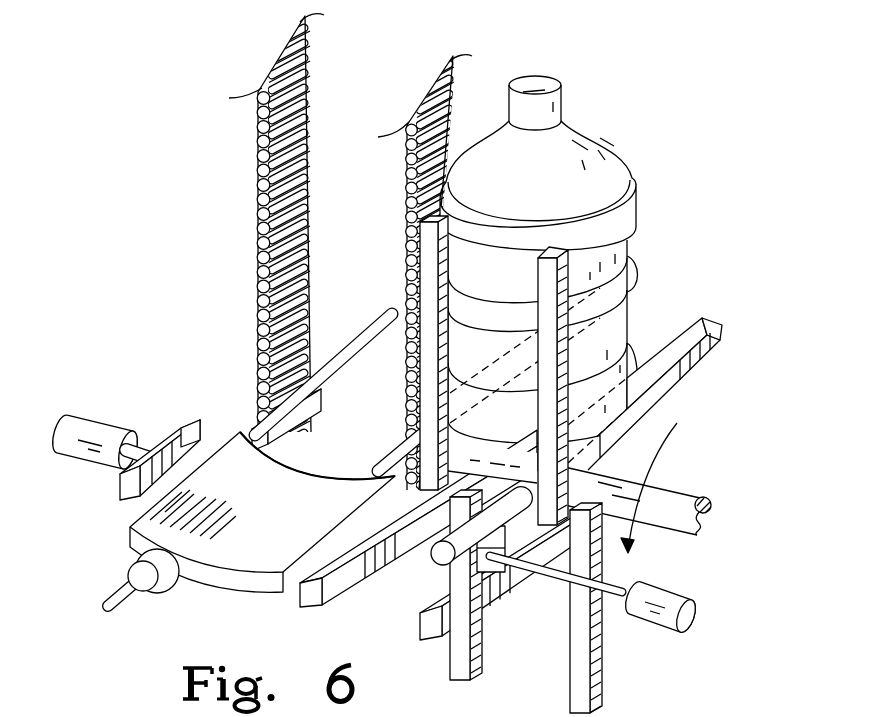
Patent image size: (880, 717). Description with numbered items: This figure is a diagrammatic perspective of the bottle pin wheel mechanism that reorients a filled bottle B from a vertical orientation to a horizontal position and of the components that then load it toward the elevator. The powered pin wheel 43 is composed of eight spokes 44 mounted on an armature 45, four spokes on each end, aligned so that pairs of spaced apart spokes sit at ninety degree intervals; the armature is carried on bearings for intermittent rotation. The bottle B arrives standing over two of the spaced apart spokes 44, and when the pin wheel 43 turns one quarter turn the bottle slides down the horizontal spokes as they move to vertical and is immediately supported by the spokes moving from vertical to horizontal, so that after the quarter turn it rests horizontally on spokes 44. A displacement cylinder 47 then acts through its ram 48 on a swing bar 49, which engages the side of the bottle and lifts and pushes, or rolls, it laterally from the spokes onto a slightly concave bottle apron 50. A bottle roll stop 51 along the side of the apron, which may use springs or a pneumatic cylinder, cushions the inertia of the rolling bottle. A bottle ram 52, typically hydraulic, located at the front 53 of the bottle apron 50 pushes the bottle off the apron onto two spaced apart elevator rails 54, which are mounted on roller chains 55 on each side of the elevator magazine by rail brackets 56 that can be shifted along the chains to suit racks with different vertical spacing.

The bottle B is at (568, 153).
The powered pin wheel 43 is at (709, 371).
The spokes 44 is at (420, 616).
The armature 45 is at (672, 492).
The displacement cylinder 47 is at (698, 618).
The ram 48 is at (538, 585).
The swing bar 49 is at (442, 556).
The bottle apron 50 is at (271, 533).
The bottle roll stop 51 is at (97, 433).
The bottle ram 52 is at (128, 592).
The front of the bottle apron 53 is at (238, 586).
The elevator rails 54 is at (350, 342).
The roller chains 55 is at (262, 205).
The rail brackets 56 is at (302, 420).